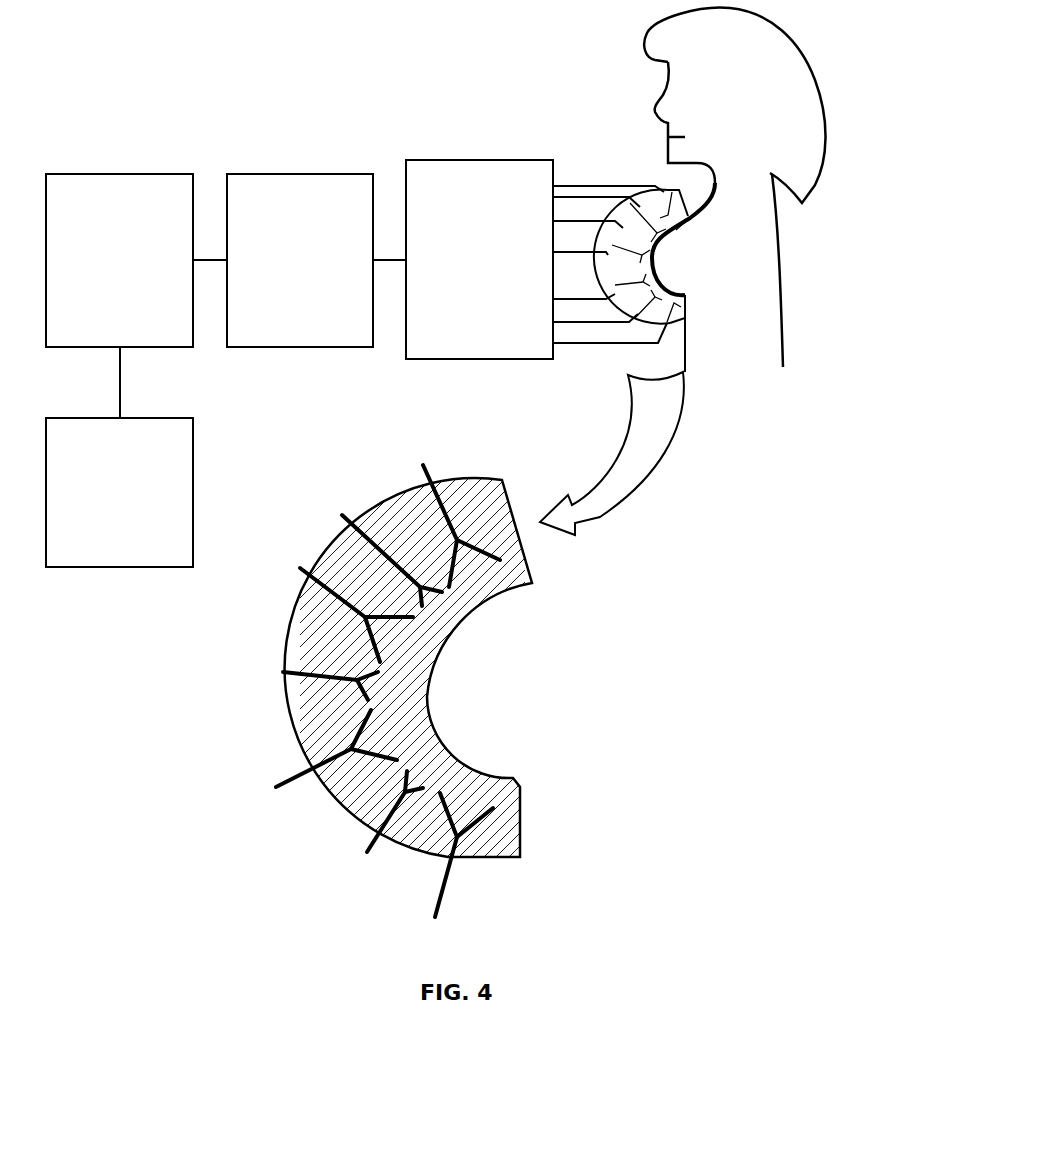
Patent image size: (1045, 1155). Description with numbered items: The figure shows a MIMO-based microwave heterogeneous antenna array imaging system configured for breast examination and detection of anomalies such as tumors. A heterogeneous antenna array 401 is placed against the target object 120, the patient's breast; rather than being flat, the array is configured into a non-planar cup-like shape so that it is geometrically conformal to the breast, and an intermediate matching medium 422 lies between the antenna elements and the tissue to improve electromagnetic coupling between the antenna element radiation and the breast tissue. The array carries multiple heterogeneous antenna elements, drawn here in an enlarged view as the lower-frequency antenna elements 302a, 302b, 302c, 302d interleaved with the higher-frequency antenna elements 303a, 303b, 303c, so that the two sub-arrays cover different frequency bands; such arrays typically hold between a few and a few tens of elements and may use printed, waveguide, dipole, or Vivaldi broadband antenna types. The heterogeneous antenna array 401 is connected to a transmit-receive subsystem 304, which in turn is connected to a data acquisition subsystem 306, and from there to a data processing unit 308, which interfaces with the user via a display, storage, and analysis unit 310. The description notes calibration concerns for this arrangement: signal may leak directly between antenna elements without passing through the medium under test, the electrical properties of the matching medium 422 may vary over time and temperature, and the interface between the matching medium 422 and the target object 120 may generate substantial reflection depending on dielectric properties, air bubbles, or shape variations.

The data processing unit 308 is at (98, 174).
The data acquisition subsystem 306 is at (295, 174).
The transmit-receive subsystem 304 is at (458, 160).
The display, storage, and analysis unit 310 is at (195, 495).
The heterogeneous antenna array 401 is at (667, 190).
The target object 120 is at (675, 263).
The intermediate matching medium 422 is at (373, 572).
The antenna element 302a is at (500, 553).
The antenna element 303a is at (422, 603).
The antenna element 302b is at (382, 650).
The antenna element 303b is at (372, 694).
The antenna element 302c is at (362, 731).
The antenna element 303c is at (407, 777).
The antenna element 302d is at (493, 808).